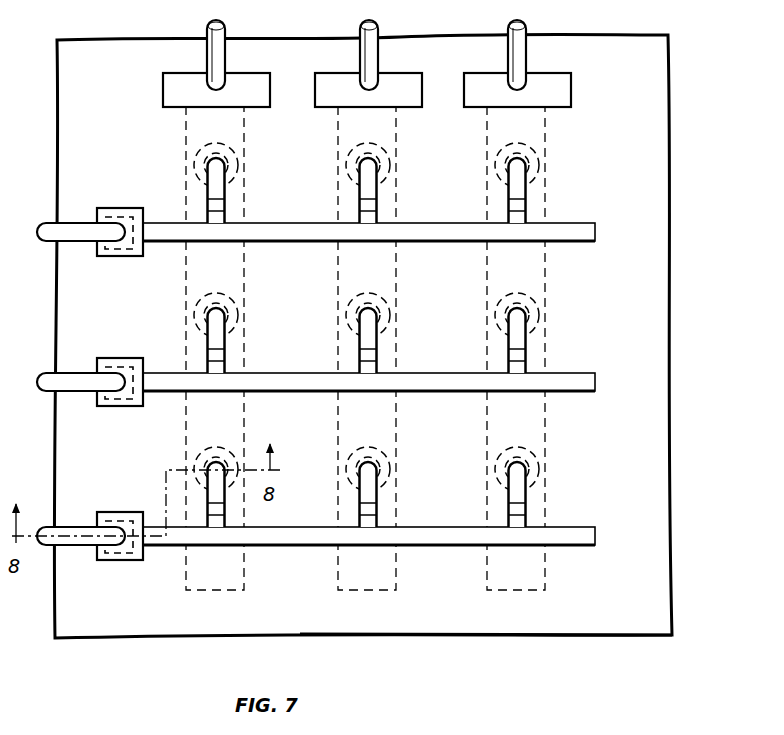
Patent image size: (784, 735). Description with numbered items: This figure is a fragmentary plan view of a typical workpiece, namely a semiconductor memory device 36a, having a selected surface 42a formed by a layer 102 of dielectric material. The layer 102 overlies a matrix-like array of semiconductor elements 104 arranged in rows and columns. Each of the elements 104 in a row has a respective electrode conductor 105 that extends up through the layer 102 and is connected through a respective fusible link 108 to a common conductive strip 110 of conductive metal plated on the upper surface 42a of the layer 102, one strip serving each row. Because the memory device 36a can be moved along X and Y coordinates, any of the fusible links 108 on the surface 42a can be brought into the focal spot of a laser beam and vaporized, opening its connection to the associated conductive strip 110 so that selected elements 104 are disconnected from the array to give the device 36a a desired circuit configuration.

The semiconductor memory device 36a is at (675, 199).
The selected surface 42a is at (646, 604).
The layer of dielectric material 102 is at (157, 554).
The semiconductor elements 104 is at (233, 147).
The electrode conductor 105 is at (223, 192).
The fusible link 108 is at (228, 212).
The common conductive strip 110 is at (592, 231).